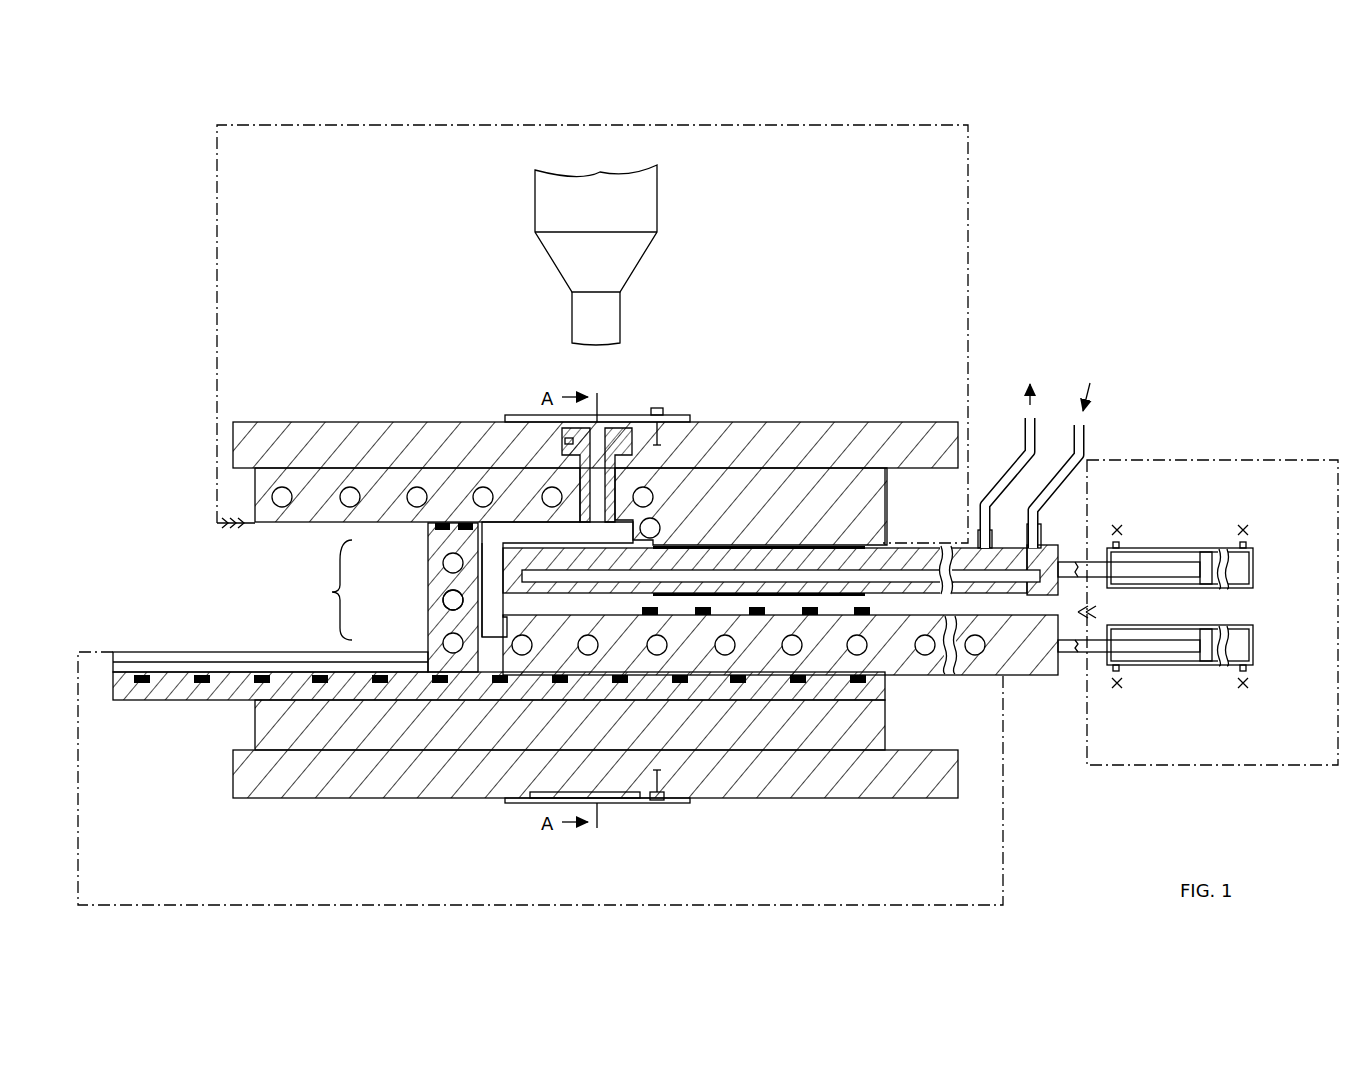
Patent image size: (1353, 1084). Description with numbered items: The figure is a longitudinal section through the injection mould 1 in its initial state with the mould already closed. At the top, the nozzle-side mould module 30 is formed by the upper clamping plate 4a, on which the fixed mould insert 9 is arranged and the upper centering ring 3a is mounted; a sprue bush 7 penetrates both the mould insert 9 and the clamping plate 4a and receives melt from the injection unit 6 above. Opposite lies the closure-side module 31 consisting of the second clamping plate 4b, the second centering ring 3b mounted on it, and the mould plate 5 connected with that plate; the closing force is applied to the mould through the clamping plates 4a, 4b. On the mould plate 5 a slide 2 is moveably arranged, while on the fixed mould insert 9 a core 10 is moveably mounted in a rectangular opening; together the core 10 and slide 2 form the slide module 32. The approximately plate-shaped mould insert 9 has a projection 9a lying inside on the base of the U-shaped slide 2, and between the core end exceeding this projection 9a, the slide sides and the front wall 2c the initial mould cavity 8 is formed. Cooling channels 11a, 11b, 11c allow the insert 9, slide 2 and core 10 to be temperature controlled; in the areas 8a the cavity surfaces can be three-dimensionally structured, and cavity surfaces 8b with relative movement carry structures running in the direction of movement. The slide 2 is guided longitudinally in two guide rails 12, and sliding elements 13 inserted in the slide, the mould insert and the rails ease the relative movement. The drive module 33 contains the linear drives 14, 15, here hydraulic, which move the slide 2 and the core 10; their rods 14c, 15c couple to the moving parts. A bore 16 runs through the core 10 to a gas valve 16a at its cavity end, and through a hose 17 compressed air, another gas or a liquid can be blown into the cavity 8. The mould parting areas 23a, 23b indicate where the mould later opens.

The mold 1 is at (858, 414).
The slide 2 is at (427, 567).
The front wall 2c is at (430, 636).
The upper centering ring 3a is at (680, 420).
The second centering ring 3b is at (688, 803).
The clamping plate 4a is at (297, 428).
The second clamping plate 4b is at (345, 775).
The mould plate 5 is at (870, 730).
The injection unit 6 is at (635, 190).
The sprue bush 7 is at (605, 428).
The mould cavity 8 is at (625, 428).
The areas 8a is at (620, 537).
The mould cavity surfaces 8b is at (527, 548).
The fixed mould insert 9 is at (787, 500).
The projection 9a is at (890, 520).
The core 10 is at (540, 565).
The cooling channel 11a is at (445, 600).
The cooling channel 11b is at (350, 497).
The cooling channel 11c is at (1085, 565).
The guide rails 12 is at (165, 692).
The sliding elements 13 is at (425, 527).
The linear drive 14 is at (1195, 668).
The lower heater block 14c is at (1083, 645).
The linear drive 15 is at (1183, 548).
The end cap 15c is at (1075, 560).
The bore 16 is at (922, 545).
The gas valve 16a is at (503, 543).
The hose 17 is at (1022, 448).
The mould parting area 23a is at (208, 520).
The mould parting area 23b is at (1092, 612).
The nozzle-side mould module 30 is at (876, 214).
The closure-side module 31 is at (907, 826).
The slide module 32 is at (326, 590).
The drive module 33 is at (1296, 521).